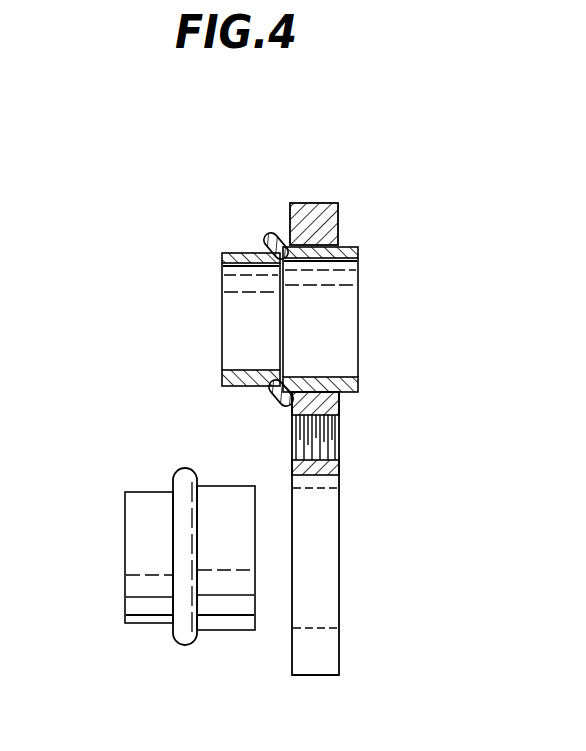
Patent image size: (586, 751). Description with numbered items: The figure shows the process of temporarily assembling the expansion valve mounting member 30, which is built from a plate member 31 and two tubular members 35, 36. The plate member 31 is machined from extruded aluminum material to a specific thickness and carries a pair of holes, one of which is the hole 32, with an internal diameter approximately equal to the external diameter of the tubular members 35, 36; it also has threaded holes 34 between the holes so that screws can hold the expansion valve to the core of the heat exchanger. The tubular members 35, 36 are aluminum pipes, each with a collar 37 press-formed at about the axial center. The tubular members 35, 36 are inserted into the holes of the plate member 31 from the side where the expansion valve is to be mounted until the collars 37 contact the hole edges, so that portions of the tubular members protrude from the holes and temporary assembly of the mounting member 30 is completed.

The expansion valve mounting member 30 is at (160, 243).
The plate member 31 is at (340, 653).
The hole 32 is at (340, 556).
The threaded hole 34 is at (340, 437).
The tubular member 35 is at (148, 630).
The tubular member 36 is at (250, 252).
The collar 37 is at (270, 396).